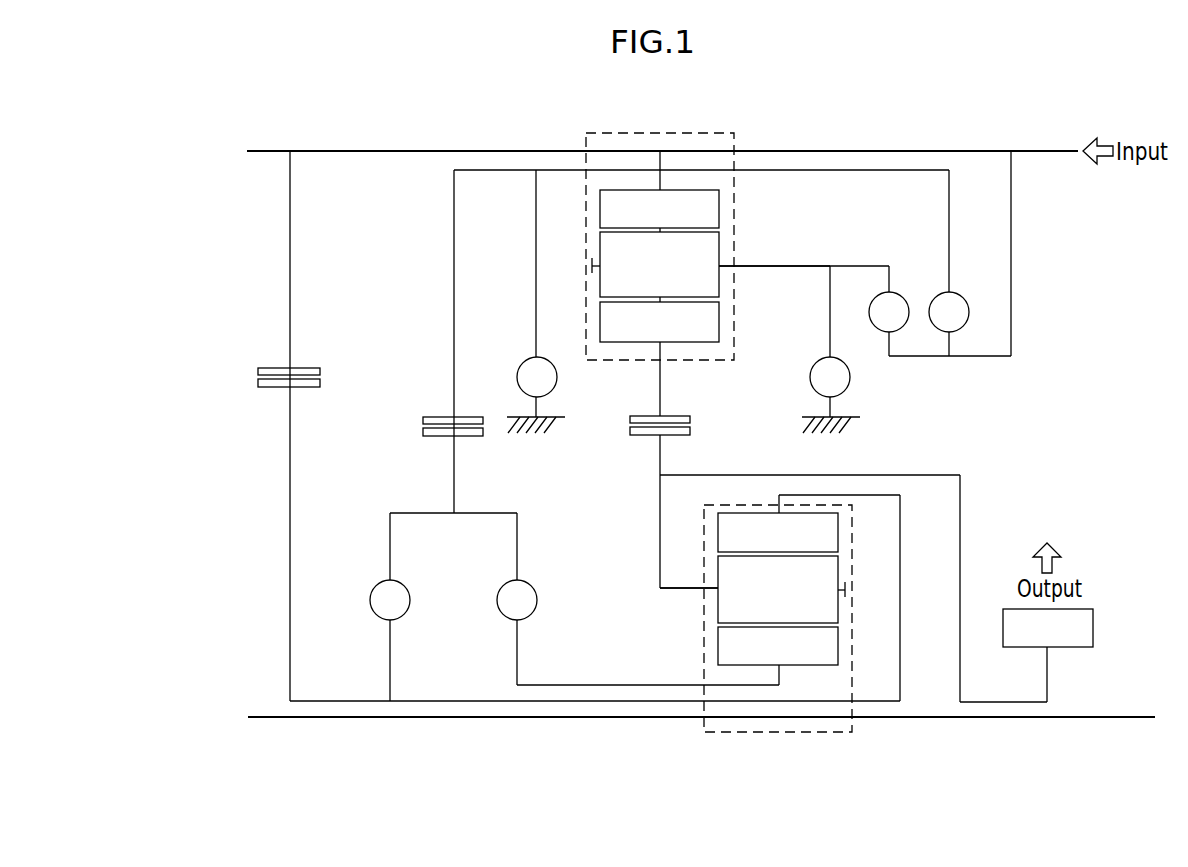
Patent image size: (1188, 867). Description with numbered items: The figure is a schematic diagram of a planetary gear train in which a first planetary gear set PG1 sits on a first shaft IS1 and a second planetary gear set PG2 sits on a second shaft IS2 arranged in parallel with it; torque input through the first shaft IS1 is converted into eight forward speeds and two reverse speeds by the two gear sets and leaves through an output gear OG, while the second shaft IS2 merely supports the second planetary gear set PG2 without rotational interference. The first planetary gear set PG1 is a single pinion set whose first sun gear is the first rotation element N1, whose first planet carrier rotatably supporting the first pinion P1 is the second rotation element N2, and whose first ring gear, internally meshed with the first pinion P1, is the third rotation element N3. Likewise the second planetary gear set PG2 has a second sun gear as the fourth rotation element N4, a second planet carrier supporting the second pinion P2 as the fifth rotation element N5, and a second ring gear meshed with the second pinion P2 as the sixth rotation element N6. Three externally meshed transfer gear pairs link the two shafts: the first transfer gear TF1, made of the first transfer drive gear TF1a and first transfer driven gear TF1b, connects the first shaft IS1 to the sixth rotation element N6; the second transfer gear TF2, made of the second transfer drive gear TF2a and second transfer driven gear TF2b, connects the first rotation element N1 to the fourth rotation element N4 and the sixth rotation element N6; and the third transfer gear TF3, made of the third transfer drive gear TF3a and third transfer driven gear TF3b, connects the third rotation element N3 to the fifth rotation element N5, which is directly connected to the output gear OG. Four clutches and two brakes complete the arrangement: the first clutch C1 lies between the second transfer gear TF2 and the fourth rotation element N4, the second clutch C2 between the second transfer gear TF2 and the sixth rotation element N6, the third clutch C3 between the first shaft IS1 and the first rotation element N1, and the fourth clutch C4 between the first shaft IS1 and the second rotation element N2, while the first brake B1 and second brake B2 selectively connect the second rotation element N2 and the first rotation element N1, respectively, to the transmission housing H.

The first shaft IS1 is at (950, 150).
The second shaft IS2 is at (1037, 720).
The first planetary gear set PG1 is at (654, 127).
The second planetary gear set PG2 is at (862, 726).
The first rotation element N1 is at (659, 209).
The second rotation element N2 is at (766, 263).
The third rotation element N3 is at (659, 322).
The fourth rotation element N4 is at (778, 646).
The fifth rotation element N5 is at (672, 593).
The sixth rotation element N6 is at (778, 532).
The first pinion P1 is at (655, 264).
The second pinion P2 is at (781, 589).
The first transfer gear TF1 is at (235, 380).
The first transfer drive gear TF1a is at (258, 371).
The first transfer driven gear TF1b is at (258, 384).
The second transfer gear TF2 is at (400, 428).
The second transfer drive gear TF2a is at (423, 420).
The second transfer driven gear TF2b is at (423, 433).
The third transfer gear TF3 is at (712, 427).
The third transfer drive gear TF3a is at (690, 420).
The third transfer driven gear TF3b is at (690, 432).
The first brake B1 is at (831, 395).
The second brake B2 is at (536, 395).
The first clutch C1 is at (517, 600).
The second clutch C2 is at (390, 600).
The third clutch C3 is at (949, 312).
The fourth clutch C4 is at (889, 312).
The output gear OG is at (1048, 628).
The transmission housing H is at (731, 439).